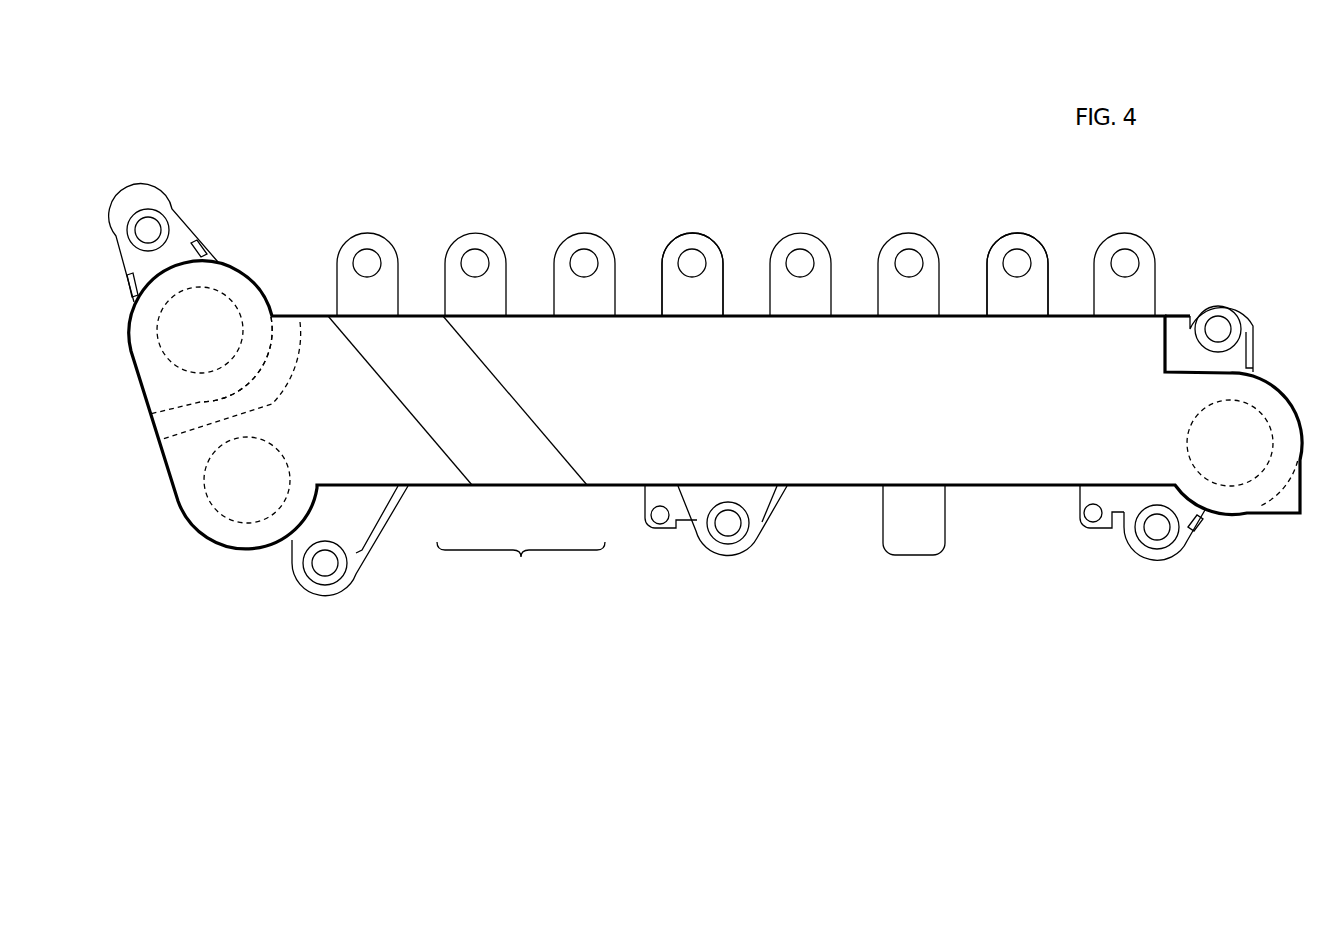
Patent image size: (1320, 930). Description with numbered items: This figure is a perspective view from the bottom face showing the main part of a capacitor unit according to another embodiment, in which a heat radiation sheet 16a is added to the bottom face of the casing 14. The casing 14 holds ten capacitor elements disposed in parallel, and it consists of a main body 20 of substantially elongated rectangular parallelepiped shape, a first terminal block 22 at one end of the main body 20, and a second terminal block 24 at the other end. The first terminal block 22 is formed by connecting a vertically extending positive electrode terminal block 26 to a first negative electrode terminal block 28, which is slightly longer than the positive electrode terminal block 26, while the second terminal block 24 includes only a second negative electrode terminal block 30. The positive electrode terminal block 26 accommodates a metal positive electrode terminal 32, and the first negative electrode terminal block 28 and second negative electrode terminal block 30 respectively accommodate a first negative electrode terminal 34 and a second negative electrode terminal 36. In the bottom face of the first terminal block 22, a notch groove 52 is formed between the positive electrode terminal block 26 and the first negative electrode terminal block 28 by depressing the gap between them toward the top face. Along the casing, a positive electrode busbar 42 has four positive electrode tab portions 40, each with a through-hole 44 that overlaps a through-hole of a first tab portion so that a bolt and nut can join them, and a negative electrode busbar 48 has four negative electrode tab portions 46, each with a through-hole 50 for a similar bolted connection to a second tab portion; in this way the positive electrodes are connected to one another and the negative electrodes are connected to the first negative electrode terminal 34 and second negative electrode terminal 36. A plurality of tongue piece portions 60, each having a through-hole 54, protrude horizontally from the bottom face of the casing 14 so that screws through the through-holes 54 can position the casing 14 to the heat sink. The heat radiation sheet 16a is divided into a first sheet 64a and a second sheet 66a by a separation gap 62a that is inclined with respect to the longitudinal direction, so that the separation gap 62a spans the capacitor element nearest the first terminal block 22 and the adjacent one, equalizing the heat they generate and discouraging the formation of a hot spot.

The casing 14 is at (988, 485).
The heat radiation sheet 16a is at (521, 563).
The main body 20 is at (848, 463).
The first terminal block 22 is at (100, 388).
The second terminal block 24 is at (1231, 500).
The positive electrode terminal block 26 is at (193, 488).
The first negative electrode terminal block 28 is at (163, 388).
The second negative electrode terminal block 30 is at (1270, 507).
The positive electrode terminal 32 is at (277, 457).
The first negative electrode terminal 34 is at (230, 297).
The second negative electrode terminal 36 is at (1256, 405).
The positive electrode tab portion 40 is at (352, 243).
The positive electrode busbar 42 is at (1017, 298).
The through-hole 44 is at (372, 258).
The negative electrode tab portion 46 is at (460, 243).
The negative electrode busbar 48 is at (690, 298).
The through-hole 50 is at (480, 258).
The notch groove 52 is at (290, 318).
The through-hole 54 is at (148, 228).
The tongue piece portion 60 is at (125, 215).
The separation gap 62a is at (500, 388).
The first sheet 64a is at (448, 476).
The second sheet 66a is at (605, 476).